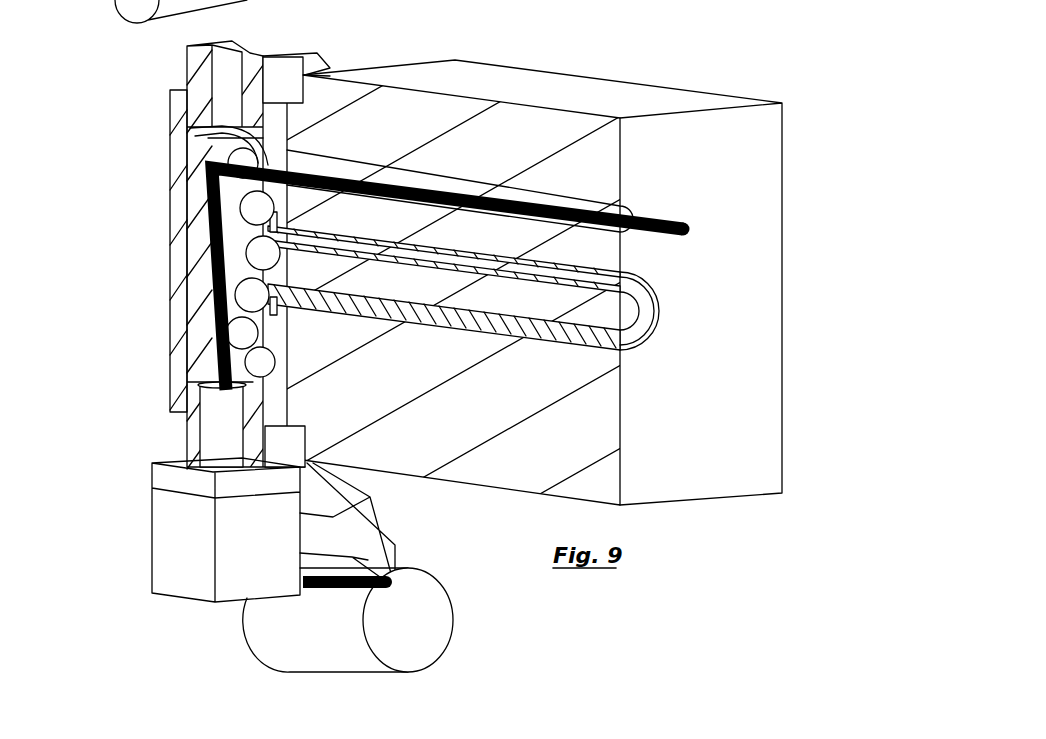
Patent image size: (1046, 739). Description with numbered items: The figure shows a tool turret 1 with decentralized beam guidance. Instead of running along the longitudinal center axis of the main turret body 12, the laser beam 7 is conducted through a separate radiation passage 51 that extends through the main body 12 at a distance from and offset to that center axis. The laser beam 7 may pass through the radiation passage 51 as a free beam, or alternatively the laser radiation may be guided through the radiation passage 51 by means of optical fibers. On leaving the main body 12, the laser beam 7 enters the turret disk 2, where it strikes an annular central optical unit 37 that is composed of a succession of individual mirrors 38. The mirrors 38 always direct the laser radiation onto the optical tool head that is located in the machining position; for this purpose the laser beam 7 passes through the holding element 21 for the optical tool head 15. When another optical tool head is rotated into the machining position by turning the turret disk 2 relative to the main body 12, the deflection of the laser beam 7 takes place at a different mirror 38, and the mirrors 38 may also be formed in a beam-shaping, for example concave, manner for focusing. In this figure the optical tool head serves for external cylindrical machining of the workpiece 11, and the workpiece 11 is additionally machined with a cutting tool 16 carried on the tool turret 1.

The tool turret 1 is at (134, 79).
The turret disk 2 is at (274, 74).
The laser beam 7 is at (662, 211).
The workpiece 11 is at (324, 638).
The main turret body 12 is at (592, 450).
The optical tool head 15 is at (172, 552).
The cutting tool 16 is at (386, 540).
The holding element 21 is at (213, 428).
The annular central optical unit 37 is at (198, 147).
The mirrors 38 is at (250, 212).
The radiation passage 51 is at (622, 205).